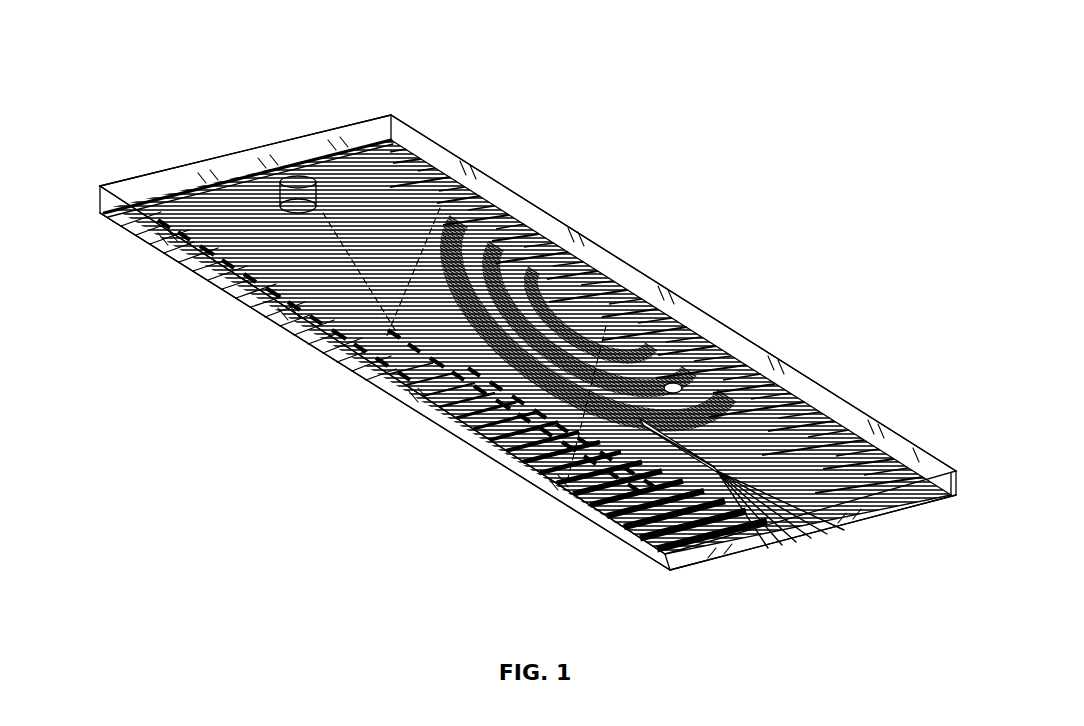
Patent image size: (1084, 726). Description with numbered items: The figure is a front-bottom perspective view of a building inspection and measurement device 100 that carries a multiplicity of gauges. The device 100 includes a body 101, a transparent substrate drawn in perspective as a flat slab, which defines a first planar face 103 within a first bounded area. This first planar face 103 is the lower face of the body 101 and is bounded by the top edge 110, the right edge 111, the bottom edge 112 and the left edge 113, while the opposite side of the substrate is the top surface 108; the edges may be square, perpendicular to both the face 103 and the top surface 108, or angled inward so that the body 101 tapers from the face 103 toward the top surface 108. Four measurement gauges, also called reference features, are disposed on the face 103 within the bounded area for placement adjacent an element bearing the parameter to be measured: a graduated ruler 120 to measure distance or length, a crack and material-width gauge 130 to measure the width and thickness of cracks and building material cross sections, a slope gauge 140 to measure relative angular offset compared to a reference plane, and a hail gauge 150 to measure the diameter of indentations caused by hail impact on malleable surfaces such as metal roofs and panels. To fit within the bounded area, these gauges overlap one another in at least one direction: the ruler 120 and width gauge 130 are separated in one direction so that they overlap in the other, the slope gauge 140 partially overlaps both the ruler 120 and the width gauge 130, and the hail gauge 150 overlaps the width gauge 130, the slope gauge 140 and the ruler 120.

The building inspection and measurement device 100 is at (373, 440).
The body 101 is at (90, 190).
The first planar face 103 is at (142, 252).
The top surface 108 is at (345, 128).
The top edge 110 is at (213, 160).
The right edge 111 is at (235, 305).
The bottom edge 112 is at (695, 540).
The left edge 113 is at (625, 264).
The graduated ruler 120 is at (537, 228).
The crack and material-width gauge 130 is at (443, 436).
The slope gauge 140 is at (830, 530).
The hail gauge 150 is at (667, 363).